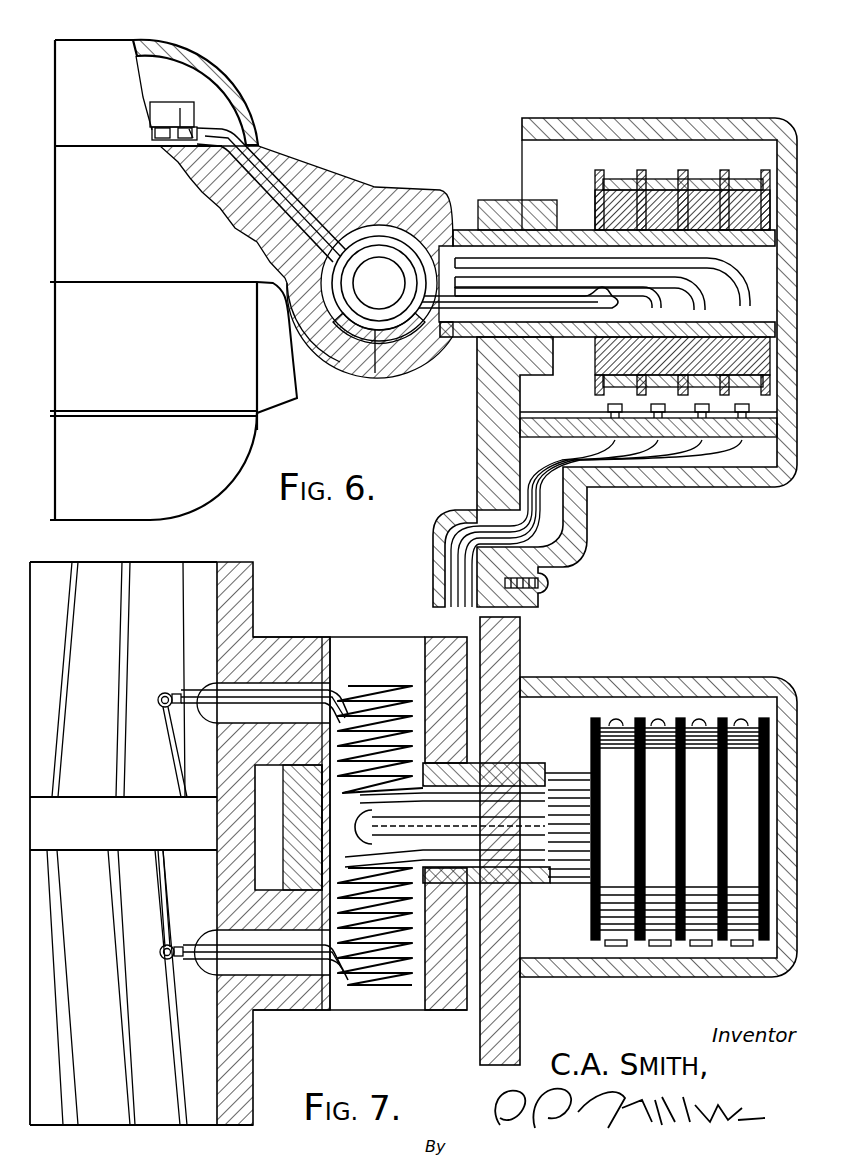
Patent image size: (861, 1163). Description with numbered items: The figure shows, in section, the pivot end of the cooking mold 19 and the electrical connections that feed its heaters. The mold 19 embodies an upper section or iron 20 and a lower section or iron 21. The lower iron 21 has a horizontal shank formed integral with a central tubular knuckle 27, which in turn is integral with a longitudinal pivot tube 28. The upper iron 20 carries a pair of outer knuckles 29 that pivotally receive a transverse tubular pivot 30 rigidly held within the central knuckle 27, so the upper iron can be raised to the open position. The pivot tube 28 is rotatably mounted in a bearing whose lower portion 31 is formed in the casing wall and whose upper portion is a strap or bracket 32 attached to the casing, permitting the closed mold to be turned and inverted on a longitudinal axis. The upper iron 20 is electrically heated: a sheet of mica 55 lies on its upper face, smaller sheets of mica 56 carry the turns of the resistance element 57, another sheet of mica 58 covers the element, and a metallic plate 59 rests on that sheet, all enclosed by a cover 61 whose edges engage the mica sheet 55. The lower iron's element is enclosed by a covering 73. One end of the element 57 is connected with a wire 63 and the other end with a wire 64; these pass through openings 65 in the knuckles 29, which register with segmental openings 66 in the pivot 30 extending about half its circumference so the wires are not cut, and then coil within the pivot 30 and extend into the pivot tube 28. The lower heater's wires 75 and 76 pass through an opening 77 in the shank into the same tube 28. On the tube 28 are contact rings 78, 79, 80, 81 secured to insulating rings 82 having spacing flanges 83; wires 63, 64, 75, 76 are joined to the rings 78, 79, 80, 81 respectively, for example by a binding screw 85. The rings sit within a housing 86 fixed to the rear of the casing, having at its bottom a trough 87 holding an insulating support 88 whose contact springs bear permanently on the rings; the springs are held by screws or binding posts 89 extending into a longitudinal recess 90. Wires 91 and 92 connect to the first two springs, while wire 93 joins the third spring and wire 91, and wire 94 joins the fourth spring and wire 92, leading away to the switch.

In FIG. 6, the cooking mold 19 is at (274, 134).
In FIG. 6, the upper section or iron 20 is at (138, 280).
In FIG. 6, the lower section or iron 21 is at (173, 356).
In FIG. 6, the central tubular knuckle 27 is at (414, 352).
In FIG. 7, the central tubular knuckle 27 is at (286, 817).
In FIG. 6, the pivot tube 28 is at (468, 228).
In FIG. 7, the pivot tube 28 is at (540, 773).
In FIG. 6, the outer knuckles 29 is at (347, 356).
In FIG. 7, the outer knuckles 29 is at (300, 645).
In FIG. 6, the transverse tubular pivot 30 is at (371, 345).
In FIG. 7, the transverse tubular pivot 30 is at (348, 642).
In FIG. 6, the lower portion of bearing 31 is at (498, 342).
In FIG. 6, the strap or bracket 32 is at (494, 200).
In FIG. 6, the sheet of mica 55 is at (172, 152).
In FIG. 7, the sheet of mica 55 is at (205, 580).
In FIG. 6, the smaller sheets of mica 56 is at (181, 108).
In FIG. 7, the smaller sheets of mica 56 is at (163, 568).
In FIG. 6, the resistance or heating element 57 is at (196, 128).
In FIG. 7, the resistance or heating element 57 is at (127, 573).
In FIG. 6, the sheet of mica 58 is at (155, 133).
In FIG. 6, the metallic plate 59 is at (157, 110).
In FIG. 6, the cover 61 is at (228, 68).
In FIG. 6, the wire 63 is at (298, 183).
In FIG. 7, the wire 63 is at (268, 690).
In FIG. 6, the wire 64 is at (640, 300).
In FIG. 7, the wire 64 is at (273, 960).
In FIG. 6, the openings 65 is at (332, 183).
In FIG. 7, the openings 65 is at (300, 1047).
In FIG. 6, the segmental openings 66 is at (332, 336).
In FIG. 7, the segmental openings 66 is at (352, 692).
In FIG. 6, the covering 73 is at (153, 466).
In FIG. 6, the wire 75 is at (678, 296).
In FIG. 7, the wire 75 is at (368, 800).
In FIG. 6, the wire 76 is at (742, 306).
In FIG. 7, the wire 76 is at (364, 826).
In FIG. 7, the opening 77 is at (365, 851).
In FIG. 6, the contact ring 78 is at (612, 178).
In FIG. 7, the contact ring 78 is at (622, 832).
In FIG. 6, the contact ring 79 is at (654, 180).
In FIG. 7, the contact ring 79 is at (665, 832).
In FIG. 6, the contact ring 80 is at (700, 180).
In FIG. 7, the contact ring 80 is at (706, 832).
In FIG. 6, the contact ring 81 is at (742, 180).
In FIG. 7, the contact ring 81 is at (748, 832).
In FIG. 6, the insulating rings 82 is at (612, 207).
In FIG. 6, the spacing flanges 83 is at (597, 175).
In FIG. 7, the spacing flanges 83 is at (635, 716).
In FIG. 7, the binding screw 85 is at (699, 720).
In FIG. 6, the housing 86 is at (738, 119).
In FIG. 7, the housing 86 is at (713, 686).
In FIG. 6, the pocket or trough 87 is at (742, 442).
In FIG. 6, the insulating support or member 88 is at (712, 440).
In FIG. 6, the screws or binding posts 89 is at (613, 408).
In FIG. 6, the longitudinal recess 90 is at (730, 440).
In FIG. 6, the wire 91 is at (608, 492).
In FIG. 6, the wire 92 is at (632, 485).
In FIG. 6, the wire 93 is at (665, 488).
In FIG. 6, the wire 94 is at (692, 480).